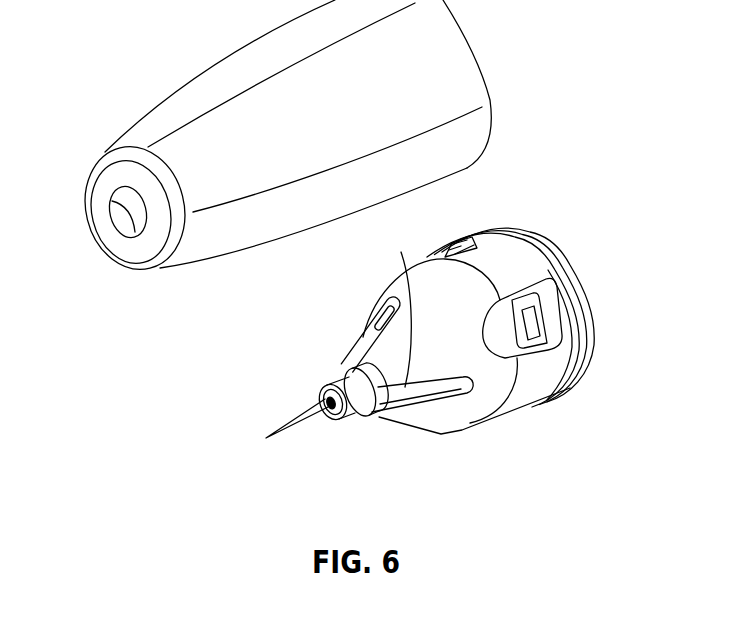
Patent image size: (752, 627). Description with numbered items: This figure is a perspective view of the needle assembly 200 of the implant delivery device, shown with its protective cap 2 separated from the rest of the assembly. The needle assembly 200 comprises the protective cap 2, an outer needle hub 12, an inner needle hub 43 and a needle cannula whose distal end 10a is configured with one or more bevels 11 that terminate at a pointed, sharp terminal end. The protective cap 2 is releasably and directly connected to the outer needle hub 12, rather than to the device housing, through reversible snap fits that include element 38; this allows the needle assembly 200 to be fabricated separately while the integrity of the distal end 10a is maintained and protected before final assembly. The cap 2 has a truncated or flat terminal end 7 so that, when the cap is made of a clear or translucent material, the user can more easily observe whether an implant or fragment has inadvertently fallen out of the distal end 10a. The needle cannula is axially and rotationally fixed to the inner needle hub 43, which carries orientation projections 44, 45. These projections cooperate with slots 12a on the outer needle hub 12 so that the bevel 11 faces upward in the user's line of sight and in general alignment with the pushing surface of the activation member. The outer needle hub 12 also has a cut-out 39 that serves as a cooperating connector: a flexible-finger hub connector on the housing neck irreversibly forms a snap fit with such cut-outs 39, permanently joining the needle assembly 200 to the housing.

The protective cap 2 is at (445, 68).
The truncated terminal end 7 is at (122, 244).
The needle assembly 200 is at (553, 157).
The outer needle hub 12 is at (510, 268).
The slot 12a is at (401, 252).
The snap fit element 38 is at (467, 237).
The cut-out 39 is at (550, 340).
The inner needle hub 43 is at (340, 378).
The orientation projection 44 is at (420, 393).
The orientation projection 45 is at (373, 332).
The bevel 11 is at (280, 425).
The distal end 10a is at (312, 413).